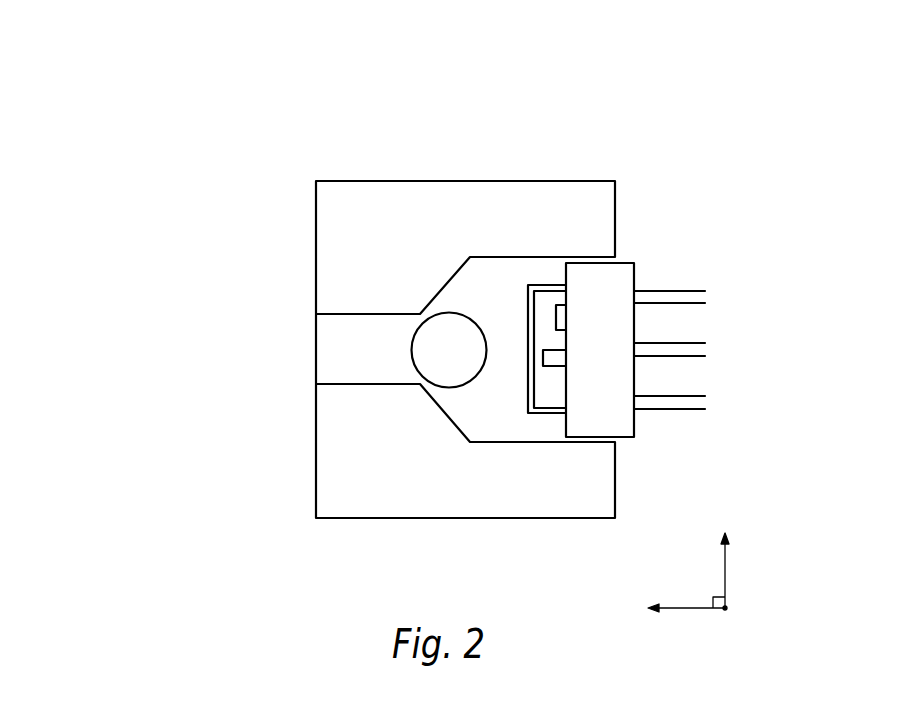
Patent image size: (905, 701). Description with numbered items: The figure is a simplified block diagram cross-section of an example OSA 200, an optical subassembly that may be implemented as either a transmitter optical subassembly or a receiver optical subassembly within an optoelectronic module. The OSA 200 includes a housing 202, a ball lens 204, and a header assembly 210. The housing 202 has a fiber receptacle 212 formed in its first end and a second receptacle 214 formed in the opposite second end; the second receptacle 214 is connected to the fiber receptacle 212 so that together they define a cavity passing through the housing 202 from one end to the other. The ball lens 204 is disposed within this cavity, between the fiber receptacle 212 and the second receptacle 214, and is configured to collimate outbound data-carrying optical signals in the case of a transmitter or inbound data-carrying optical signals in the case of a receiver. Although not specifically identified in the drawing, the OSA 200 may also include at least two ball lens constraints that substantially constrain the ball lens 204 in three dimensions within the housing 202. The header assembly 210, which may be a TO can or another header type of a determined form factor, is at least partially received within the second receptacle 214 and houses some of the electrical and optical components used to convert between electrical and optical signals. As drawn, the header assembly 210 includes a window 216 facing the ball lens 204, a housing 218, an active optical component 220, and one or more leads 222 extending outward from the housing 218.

The OSA 200 is at (613, 108).
The housing 202 is at (422, 180).
The ball lens 204 is at (468, 359).
The header assembly 210 is at (623, 260).
The fiber receptacle 212 is at (344, 352).
The second receptacle 214 is at (512, 287).
The window 216 is at (527, 393).
The housing 218 is at (553, 414).
The active optical component 220 is at (548, 350).
The leads 222 is at (688, 291).